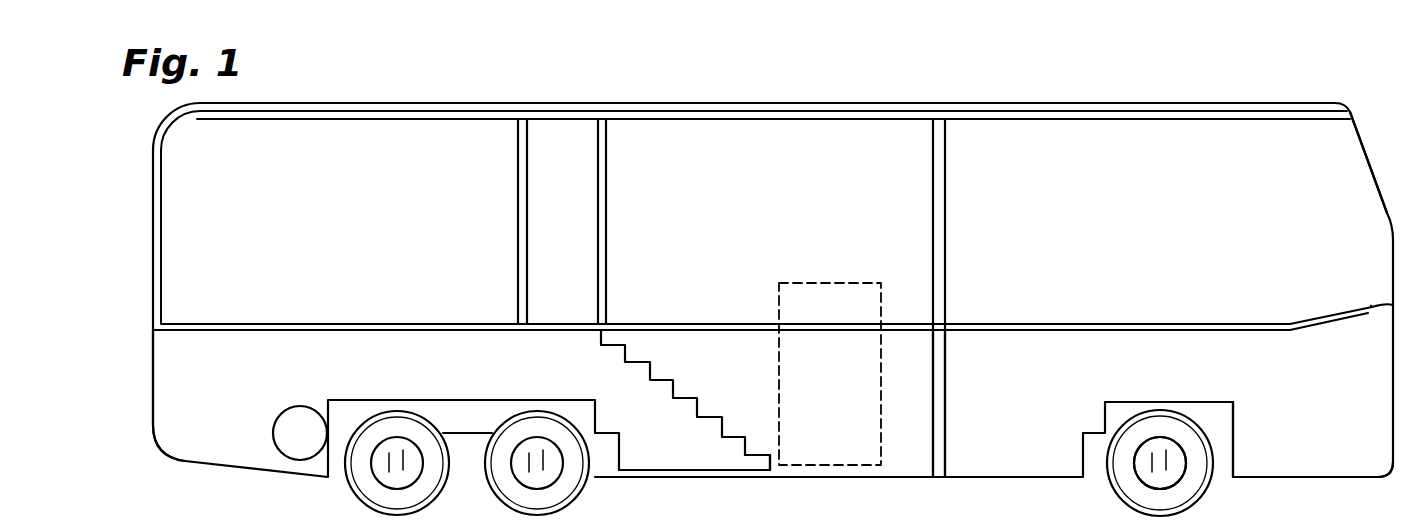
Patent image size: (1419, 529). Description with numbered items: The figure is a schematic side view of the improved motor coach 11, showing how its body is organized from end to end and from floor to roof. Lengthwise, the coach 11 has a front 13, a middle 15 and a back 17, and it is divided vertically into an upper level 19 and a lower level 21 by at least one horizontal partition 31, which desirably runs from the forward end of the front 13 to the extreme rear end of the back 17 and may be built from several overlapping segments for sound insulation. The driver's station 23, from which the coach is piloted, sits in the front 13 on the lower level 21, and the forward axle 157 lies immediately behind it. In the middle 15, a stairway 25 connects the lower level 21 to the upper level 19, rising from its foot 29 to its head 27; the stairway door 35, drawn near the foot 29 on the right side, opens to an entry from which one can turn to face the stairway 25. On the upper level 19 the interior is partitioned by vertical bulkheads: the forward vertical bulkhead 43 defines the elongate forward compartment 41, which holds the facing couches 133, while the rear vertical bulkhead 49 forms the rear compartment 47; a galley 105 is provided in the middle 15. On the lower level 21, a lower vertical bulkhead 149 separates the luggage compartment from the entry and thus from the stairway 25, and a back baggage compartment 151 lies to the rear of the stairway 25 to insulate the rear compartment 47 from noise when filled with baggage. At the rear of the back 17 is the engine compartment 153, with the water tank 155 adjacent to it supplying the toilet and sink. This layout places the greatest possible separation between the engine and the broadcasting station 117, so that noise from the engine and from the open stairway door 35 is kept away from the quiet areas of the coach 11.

The motor coach 11 is at (826, 72).
The front portion 13 is at (1152, 104).
The middle portion 15 is at (717, 102).
The back portion 17 is at (336, 102).
The upper level 19 is at (1365, 152).
The lower level 21 is at (152, 362).
The driver's station 23 is at (1297, 422).
The stairway 25 is at (663, 380).
The head 27 is at (597, 325).
The foot 29 is at (770, 462).
The horizontal partition 31 is at (296, 321).
The stairway door 35 is at (882, 390).
The forward compartment 41 is at (1058, 135).
The forward vertical bulkhead 43 is at (945, 140).
The rear compartment 47 is at (428, 138).
The rear vertical bulkhead 49 is at (518, 180).
The galley 105 is at (694, 499).
The broadcasting station 117 is at (1313, 495).
The facing couches 133 is at (755, 469).
The lower vertical bulkhead 149 is at (945, 400).
The back baggage compartment 151 is at (460, 340).
The engine compartment 153 is at (172, 445).
The water tank 155 is at (272, 447).
The forward axle 157 is at (1175, 473).